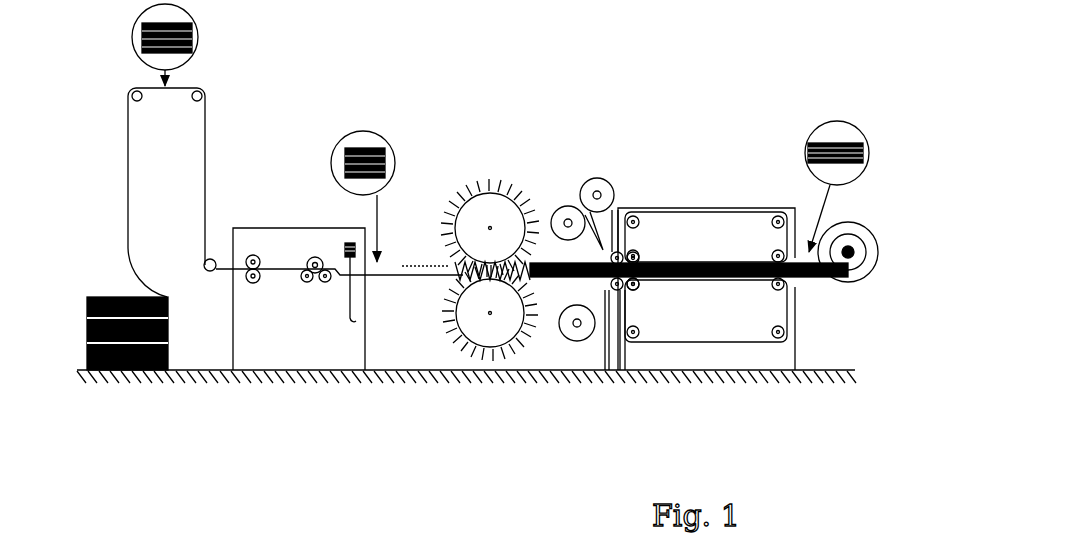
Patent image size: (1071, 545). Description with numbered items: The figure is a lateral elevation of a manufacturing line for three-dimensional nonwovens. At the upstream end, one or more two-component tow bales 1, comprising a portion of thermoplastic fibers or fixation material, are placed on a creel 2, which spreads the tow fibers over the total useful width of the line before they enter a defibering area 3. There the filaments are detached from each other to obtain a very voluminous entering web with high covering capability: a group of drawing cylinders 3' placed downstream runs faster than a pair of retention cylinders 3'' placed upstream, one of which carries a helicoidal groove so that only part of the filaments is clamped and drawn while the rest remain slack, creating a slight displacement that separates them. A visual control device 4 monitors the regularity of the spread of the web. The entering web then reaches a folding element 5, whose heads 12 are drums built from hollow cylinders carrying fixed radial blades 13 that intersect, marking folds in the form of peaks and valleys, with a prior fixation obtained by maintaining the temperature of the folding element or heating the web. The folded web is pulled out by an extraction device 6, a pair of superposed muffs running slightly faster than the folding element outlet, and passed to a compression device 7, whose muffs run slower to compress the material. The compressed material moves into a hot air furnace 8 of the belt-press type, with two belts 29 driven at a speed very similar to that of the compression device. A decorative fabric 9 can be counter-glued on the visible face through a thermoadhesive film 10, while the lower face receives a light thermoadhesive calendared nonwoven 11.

The two-component tow bale 1 is at (127, 162).
The creel 2 is at (225, 83).
The defibering area 3 is at (314, 239).
The drawing cylinders 3' is at (284, 350).
The retention cylinders 3'' is at (211, 345).
The visual control device 4 is at (337, 308).
The folding element 5 is at (469, 234).
The extraction device 6 is at (552, 294).
The compression device 7 is at (588, 294).
The hot air furnace 8 is at (701, 238).
The decorative fabric 9 is at (595, 184).
The thermoadhesive film 10 is at (562, 212).
The thermoadhesive calendared nonwoven 11 is at (577, 341).
The heads 12 is at (482, 212).
The fixed radial blades 13 is at (438, 222).
The belts 29 is at (705, 208).